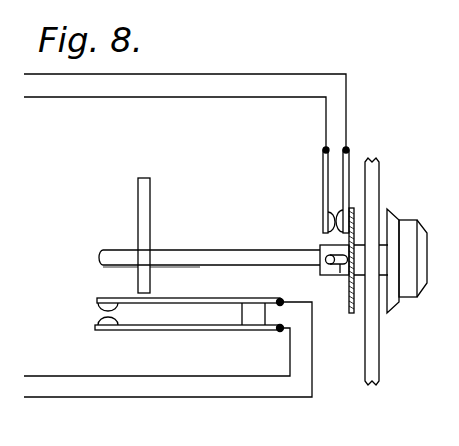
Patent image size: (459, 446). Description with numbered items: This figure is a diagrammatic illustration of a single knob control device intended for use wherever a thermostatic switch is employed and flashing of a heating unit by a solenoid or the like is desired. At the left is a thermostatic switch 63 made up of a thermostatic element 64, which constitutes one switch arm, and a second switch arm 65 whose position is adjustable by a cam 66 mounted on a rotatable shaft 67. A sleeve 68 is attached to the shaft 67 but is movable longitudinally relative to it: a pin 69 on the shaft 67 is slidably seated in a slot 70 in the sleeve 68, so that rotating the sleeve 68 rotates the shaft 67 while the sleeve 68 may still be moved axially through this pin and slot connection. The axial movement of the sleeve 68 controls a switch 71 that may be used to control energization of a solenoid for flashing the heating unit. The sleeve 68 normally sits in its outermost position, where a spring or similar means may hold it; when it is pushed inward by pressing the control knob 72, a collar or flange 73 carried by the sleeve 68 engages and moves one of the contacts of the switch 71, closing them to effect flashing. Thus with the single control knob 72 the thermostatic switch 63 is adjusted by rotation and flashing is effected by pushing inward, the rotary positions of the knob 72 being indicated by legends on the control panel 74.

The thermostatic switch 63 is at (181, 313).
The thermostatic element 64 is at (133, 333).
The switch arm 65 is at (170, 298).
The cam 66 is at (145, 214).
The rotatable shaft 67 is at (243, 250).
The sleeve 68 is at (336, 276).
The pin 69 is at (327, 270).
The slot 70 is at (341, 276).
The switch 71 is at (335, 200).
The control knob 72 is at (421, 274).
The collar or flange 73 is at (354, 218).
The control panel 74 is at (379, 340).